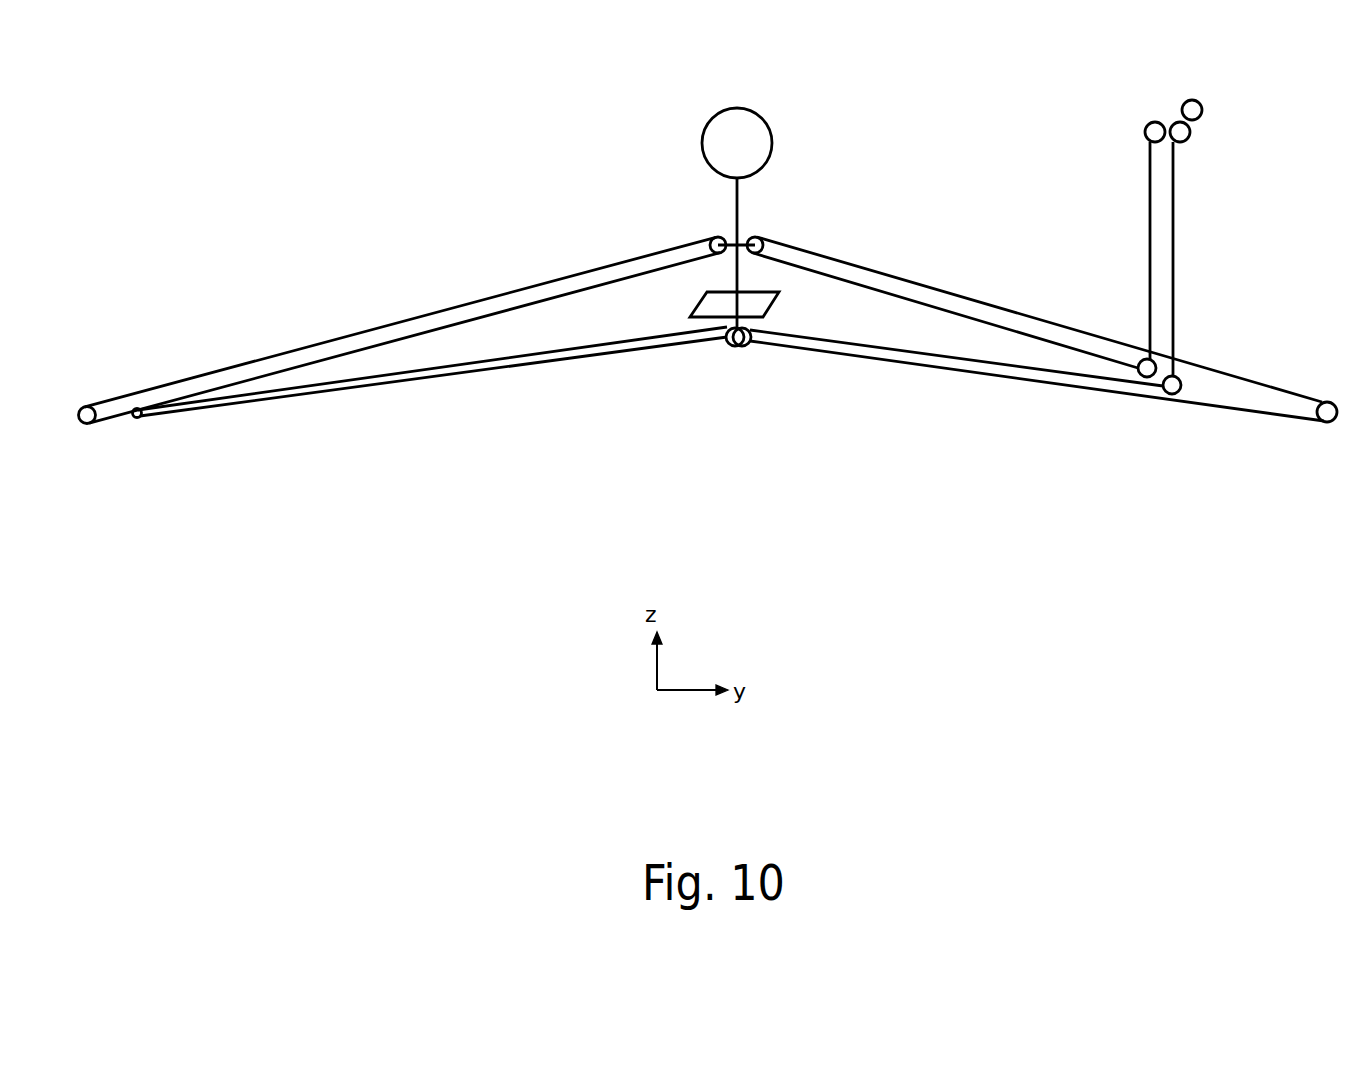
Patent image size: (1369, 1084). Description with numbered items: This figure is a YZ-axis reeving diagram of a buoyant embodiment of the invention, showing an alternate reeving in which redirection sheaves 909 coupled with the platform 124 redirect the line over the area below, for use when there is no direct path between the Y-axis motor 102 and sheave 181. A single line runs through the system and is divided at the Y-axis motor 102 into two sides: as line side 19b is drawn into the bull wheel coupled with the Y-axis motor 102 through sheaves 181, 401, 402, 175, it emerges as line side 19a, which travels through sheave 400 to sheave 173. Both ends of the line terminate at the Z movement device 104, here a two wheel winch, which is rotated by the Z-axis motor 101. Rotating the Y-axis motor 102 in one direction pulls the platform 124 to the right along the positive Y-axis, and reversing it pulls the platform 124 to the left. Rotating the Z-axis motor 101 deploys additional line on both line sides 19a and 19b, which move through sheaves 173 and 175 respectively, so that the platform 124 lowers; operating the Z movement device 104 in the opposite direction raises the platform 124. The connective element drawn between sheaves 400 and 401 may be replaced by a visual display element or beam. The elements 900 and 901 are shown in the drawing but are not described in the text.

The mass / weight 900 is at (757, 105).
The rod 901 is at (747, 202).
The sheave 401 is at (702, 232).
The sheave 400 is at (777, 231).
The sheave 402 is at (138, 406).
The platform 124 is at (778, 302).
The redirection sheaves 909 is at (740, 368).
The sheave 181 is at (82, 432).
The line side 19a is at (902, 262).
The line side 19b is at (428, 303).
The sheave 173 is at (1132, 360).
The sheave 175 is at (1185, 377).
The Z-axis motor 101 is at (1210, 115).
The Z movement device 104 is at (1183, 155).
The Y-axis motor 102 is at (1322, 428).